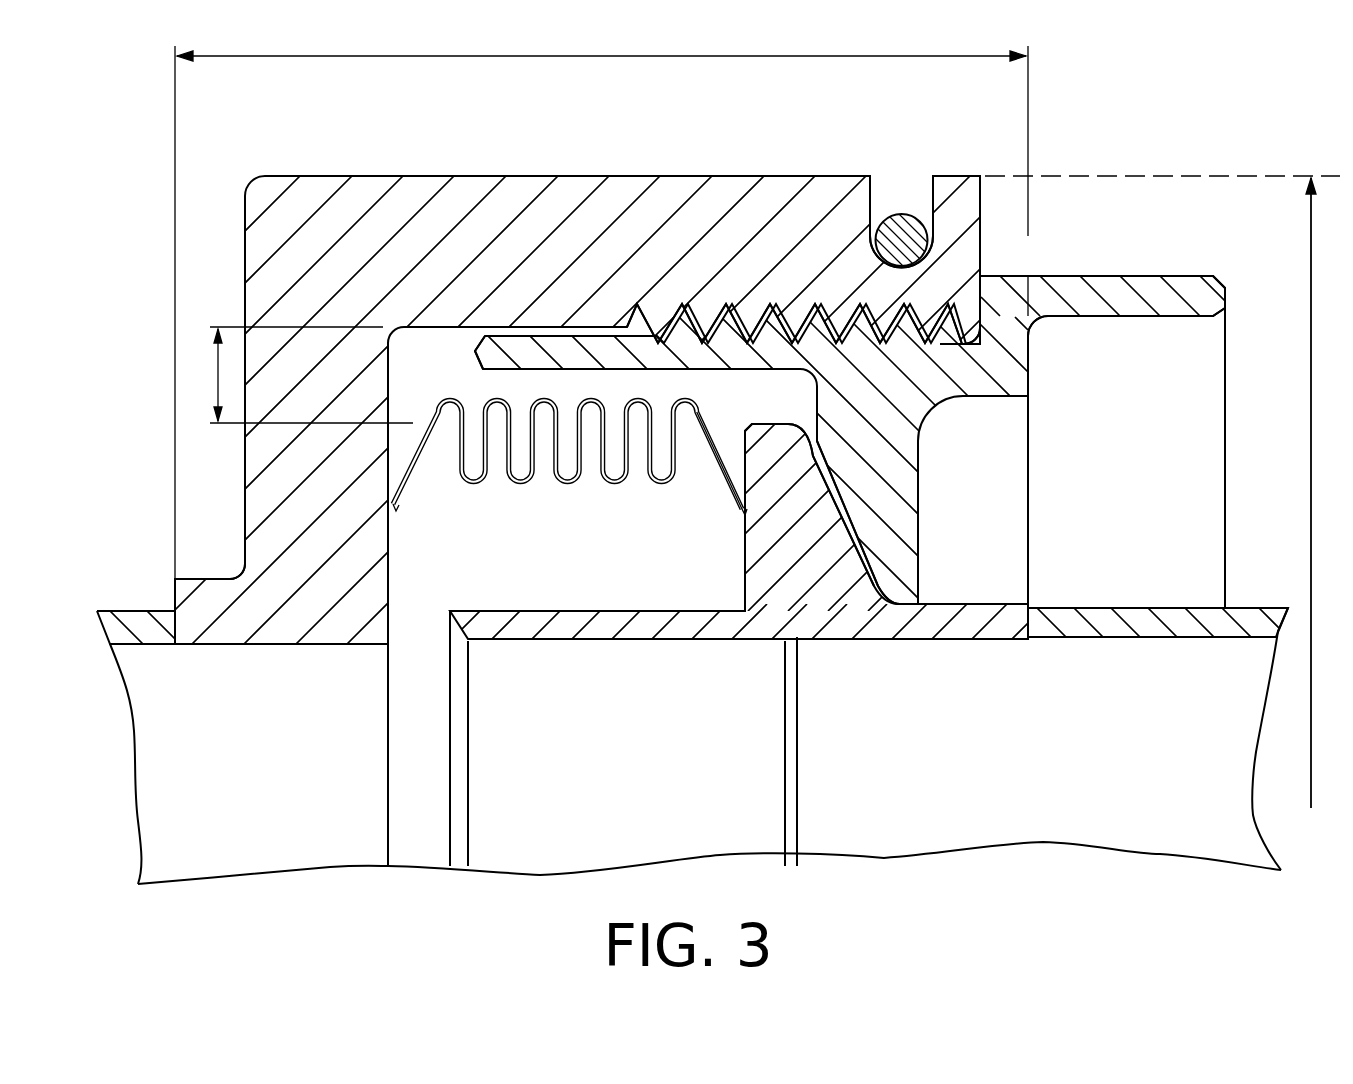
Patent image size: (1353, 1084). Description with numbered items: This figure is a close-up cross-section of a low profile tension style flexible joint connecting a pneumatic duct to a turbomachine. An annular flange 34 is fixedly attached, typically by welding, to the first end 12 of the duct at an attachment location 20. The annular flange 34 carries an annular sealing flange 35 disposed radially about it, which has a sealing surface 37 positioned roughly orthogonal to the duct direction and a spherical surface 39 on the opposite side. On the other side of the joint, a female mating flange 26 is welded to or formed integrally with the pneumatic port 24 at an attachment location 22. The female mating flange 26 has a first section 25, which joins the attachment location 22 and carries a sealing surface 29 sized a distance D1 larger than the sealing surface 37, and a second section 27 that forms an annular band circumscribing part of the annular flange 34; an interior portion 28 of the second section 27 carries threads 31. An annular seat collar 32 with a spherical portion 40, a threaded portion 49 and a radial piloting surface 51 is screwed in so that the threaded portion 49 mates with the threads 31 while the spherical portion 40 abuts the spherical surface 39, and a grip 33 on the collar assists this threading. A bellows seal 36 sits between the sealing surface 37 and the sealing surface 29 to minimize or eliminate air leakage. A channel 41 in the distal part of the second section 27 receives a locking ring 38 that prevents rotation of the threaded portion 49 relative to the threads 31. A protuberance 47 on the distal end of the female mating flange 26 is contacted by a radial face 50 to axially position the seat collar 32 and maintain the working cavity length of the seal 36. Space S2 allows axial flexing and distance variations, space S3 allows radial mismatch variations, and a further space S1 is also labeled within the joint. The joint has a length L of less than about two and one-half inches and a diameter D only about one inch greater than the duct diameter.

The first end 12 is at (1125, 605).
The attachment location 20 is at (1030, 648).
The attachment location 22 is at (168, 646).
The pneumatic port 24 is at (120, 618).
The first section 25 is at (260, 452).
The female mating flange 26 is at (337, 213).
The second section 27 is at (753, 255).
The interior portion 28 is at (588, 317).
The sealing surface 29 is at (390, 572).
The threads 31 is at (705, 320).
The annular seat collar 32 is at (1147, 272).
The grip 33 is at (1173, 307).
The annular flange 34 is at (838, 648).
The annular sealing flange 35 is at (740, 492).
The bellows seal 36 is at (525, 487).
The sealing surface 37 is at (745, 530).
The locking ring 38 is at (893, 215).
The spherical surface 39 is at (828, 522).
The spherical portion 40 is at (847, 503).
The channel 41 is at (932, 192).
The protuberance 47 is at (1020, 340).
The threaded portion 49 is at (728, 327).
The radial face 50 is at (972, 290).
The radial piloting surface 51 is at (540, 370).
The length L is at (418, 58).
The diameter D is at (1311, 405).
The distance D1 is at (197, 357).
The space S1 is at (412, 379).
The space S2 is at (402, 640).
The space S3 is at (747, 415).